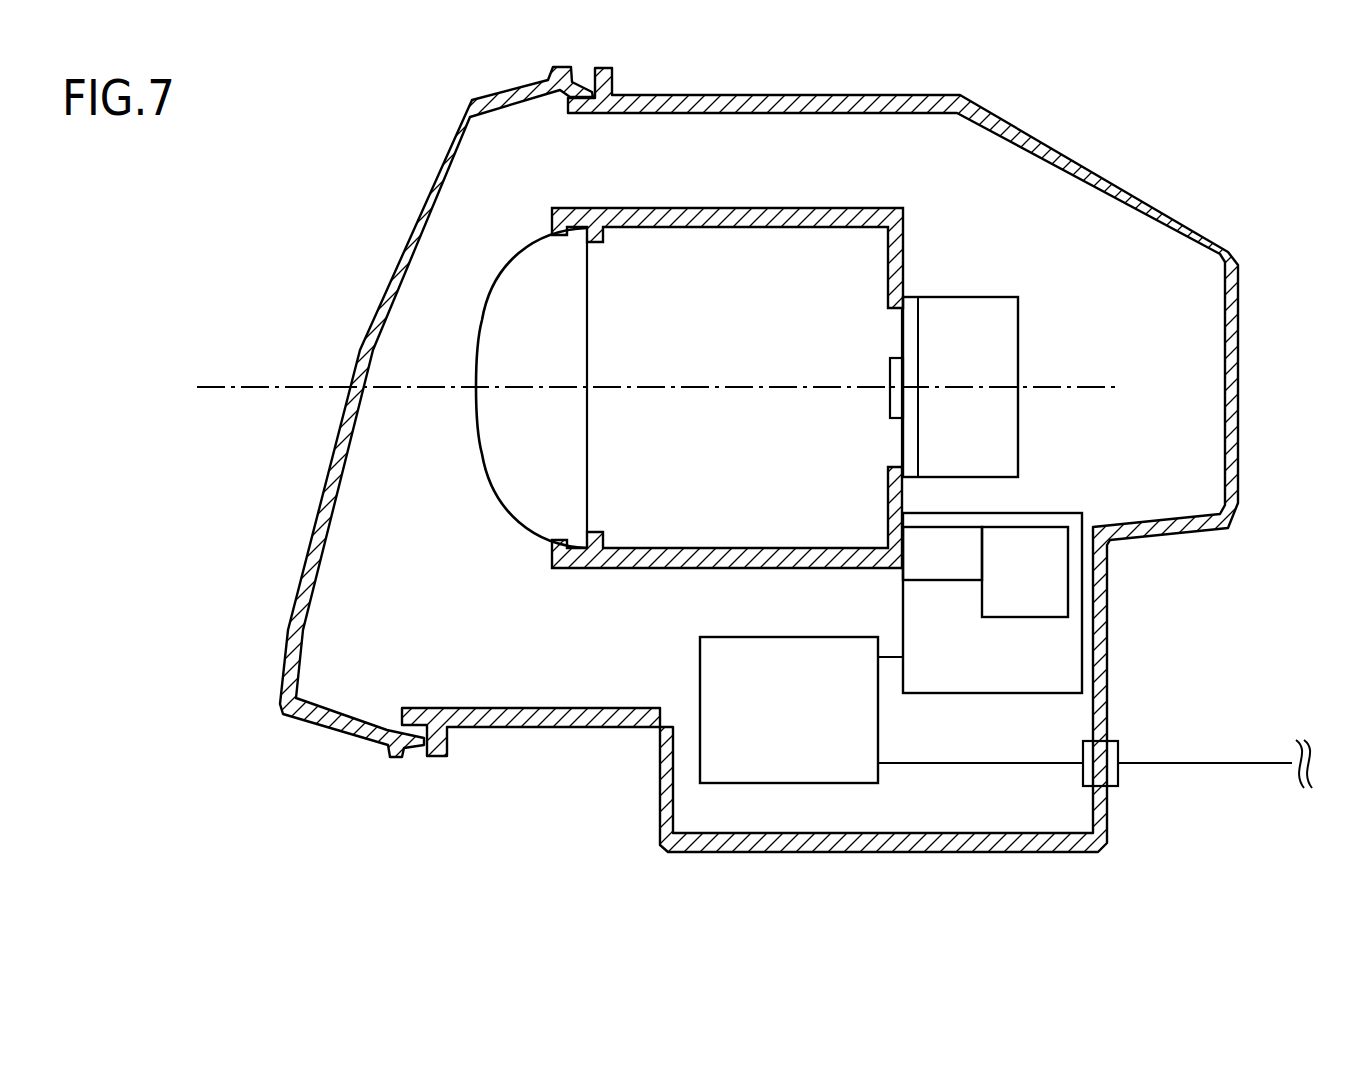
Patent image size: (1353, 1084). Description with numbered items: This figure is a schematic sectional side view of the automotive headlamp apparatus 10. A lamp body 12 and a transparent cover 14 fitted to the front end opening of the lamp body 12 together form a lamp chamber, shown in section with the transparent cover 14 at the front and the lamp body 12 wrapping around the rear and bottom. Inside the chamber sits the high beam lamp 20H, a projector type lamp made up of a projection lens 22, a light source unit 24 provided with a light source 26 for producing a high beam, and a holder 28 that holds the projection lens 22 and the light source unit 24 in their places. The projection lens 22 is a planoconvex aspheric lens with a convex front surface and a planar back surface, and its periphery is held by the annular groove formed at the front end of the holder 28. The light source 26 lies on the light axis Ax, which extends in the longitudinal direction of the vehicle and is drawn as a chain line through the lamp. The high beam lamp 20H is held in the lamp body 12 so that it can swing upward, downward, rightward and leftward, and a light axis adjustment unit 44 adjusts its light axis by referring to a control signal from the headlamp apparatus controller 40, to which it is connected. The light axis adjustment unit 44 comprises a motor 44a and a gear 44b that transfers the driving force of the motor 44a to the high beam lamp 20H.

The automotive headlamp apparatus 10 is at (769, 933).
The lamp body 12 is at (1090, 167).
The transparent cover 14 is at (428, 167).
The high beam lamp 20H is at (462, 430).
The projection lens 22 is at (518, 277).
The light source unit 24 is at (960, 272).
The light source 26 is at (889, 373).
The holder 28 is at (728, 207).
The headlamp apparatus controller 40 is at (788, 637).
The light axis adjustment unit 44 is at (1025, 585).
The motor 44a is at (1023, 526).
The gear 44b is at (947, 526).
The light axis Ax is at (245, 392).